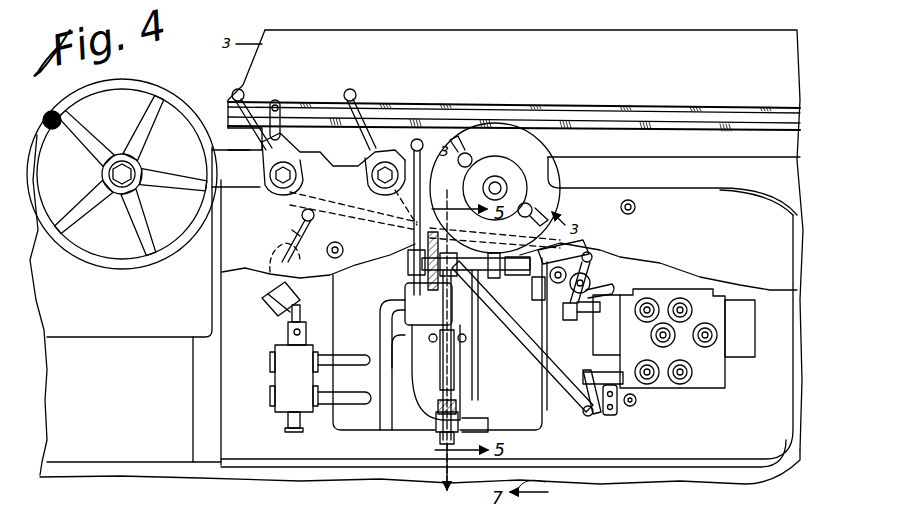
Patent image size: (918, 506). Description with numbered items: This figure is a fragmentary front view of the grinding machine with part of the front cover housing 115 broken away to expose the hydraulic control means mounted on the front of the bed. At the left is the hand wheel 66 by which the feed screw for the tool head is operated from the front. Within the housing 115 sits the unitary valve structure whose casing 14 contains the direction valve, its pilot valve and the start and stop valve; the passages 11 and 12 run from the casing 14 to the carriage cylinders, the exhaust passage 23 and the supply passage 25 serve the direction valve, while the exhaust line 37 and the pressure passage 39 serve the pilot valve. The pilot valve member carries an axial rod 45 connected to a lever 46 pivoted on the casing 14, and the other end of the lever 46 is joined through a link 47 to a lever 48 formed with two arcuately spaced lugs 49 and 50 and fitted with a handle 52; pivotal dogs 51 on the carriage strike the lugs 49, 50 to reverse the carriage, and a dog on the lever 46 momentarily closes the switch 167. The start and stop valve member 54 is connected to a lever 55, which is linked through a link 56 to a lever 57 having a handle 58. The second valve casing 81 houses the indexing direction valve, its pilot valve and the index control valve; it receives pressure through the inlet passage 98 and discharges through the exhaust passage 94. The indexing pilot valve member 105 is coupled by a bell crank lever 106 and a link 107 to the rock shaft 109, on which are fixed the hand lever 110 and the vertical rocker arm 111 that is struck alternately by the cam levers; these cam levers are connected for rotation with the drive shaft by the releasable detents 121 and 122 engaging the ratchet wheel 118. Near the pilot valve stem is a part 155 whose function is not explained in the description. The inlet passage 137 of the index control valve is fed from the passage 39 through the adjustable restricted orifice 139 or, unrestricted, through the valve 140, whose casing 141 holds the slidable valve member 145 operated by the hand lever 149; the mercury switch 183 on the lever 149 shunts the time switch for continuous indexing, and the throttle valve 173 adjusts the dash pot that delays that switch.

The passage 11 is at (650, 335).
The passage 12 is at (700, 345).
The casing 14 is at (685, 290).
The exhaust passage 23 is at (647, 384).
The supply passage 25 is at (680, 384).
The exhaust line 37 is at (690, 303).
The pressure passage 39 is at (350, 408).
The axial rod 45 is at (590, 314).
The lever 46 is at (592, 262).
The link 47 is at (348, 236).
The lever 48 is at (275, 185).
The lug 49 is at (262, 142).
The lug 50 is at (298, 140).
The pivotal dog 51 is at (282, 118).
The handle 52 is at (234, 92).
The valve member 54 is at (600, 372).
The lever 55 is at (606, 414).
The link 56 is at (574, 400).
The lever 57 is at (372, 180).
The handle 58 is at (356, 92).
The hand wheel 66 is at (138, 262).
The valve casing 81 is at (418, 396).
The exhaust passage 94 is at (436, 440).
The pressure inlet passage 98 is at (395, 374).
The valve member 105 is at (458, 362).
The bell crank lever 106 is at (456, 386).
The link 107 is at (445, 310).
The rock shaft 109 is at (426, 265).
The hand lever 110 is at (428, 140).
The rocker arm 111 is at (495, 278).
The front cover housing 115 is at (748, 180).
The ratchet wheel 118 is at (545, 160).
The releasable detent 121 is at (485, 170).
The releasable detent 122 is at (540, 212).
The inlet passage 137 is at (362, 342).
The adjustable restricted orifice 139 is at (636, 207).
The valve 140 is at (283, 396).
The casing 141 is at (280, 376).
The valve member 145 is at (288, 326).
The hand lever 149 is at (296, 236).
The pins 155 is at (466, 338).
The switch 167 is at (551, 296).
The throttle valve 173 is at (309, 240).
The mercury switch 183 is at (270, 306).